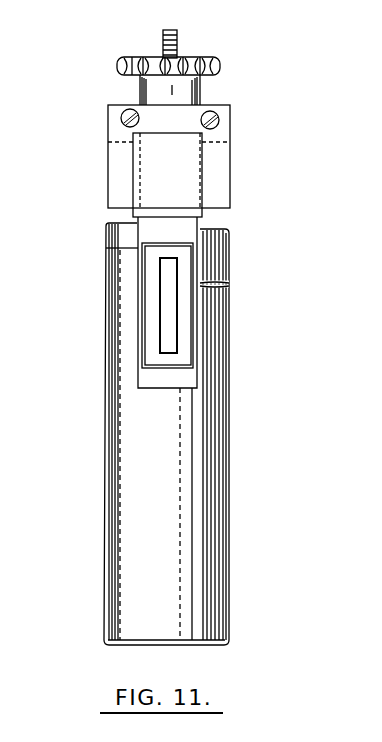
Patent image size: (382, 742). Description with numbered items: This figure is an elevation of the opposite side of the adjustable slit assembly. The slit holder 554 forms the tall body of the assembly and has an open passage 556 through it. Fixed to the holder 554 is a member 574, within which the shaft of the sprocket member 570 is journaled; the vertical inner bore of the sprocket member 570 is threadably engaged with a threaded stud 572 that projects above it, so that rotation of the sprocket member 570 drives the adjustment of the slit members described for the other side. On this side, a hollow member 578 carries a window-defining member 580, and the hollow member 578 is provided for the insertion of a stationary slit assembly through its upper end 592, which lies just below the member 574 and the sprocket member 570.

The threaded stud 572 is at (178, 40).
The sprocket member 570 is at (218, 66).
The member 574 is at (225, 127).
The upper end 592 is at (159, 134).
The hollow member 578 is at (192, 225).
The window-defining member 580 is at (150, 277).
The open passage 556 is at (172, 322).
The slit holder 554 is at (210, 458).